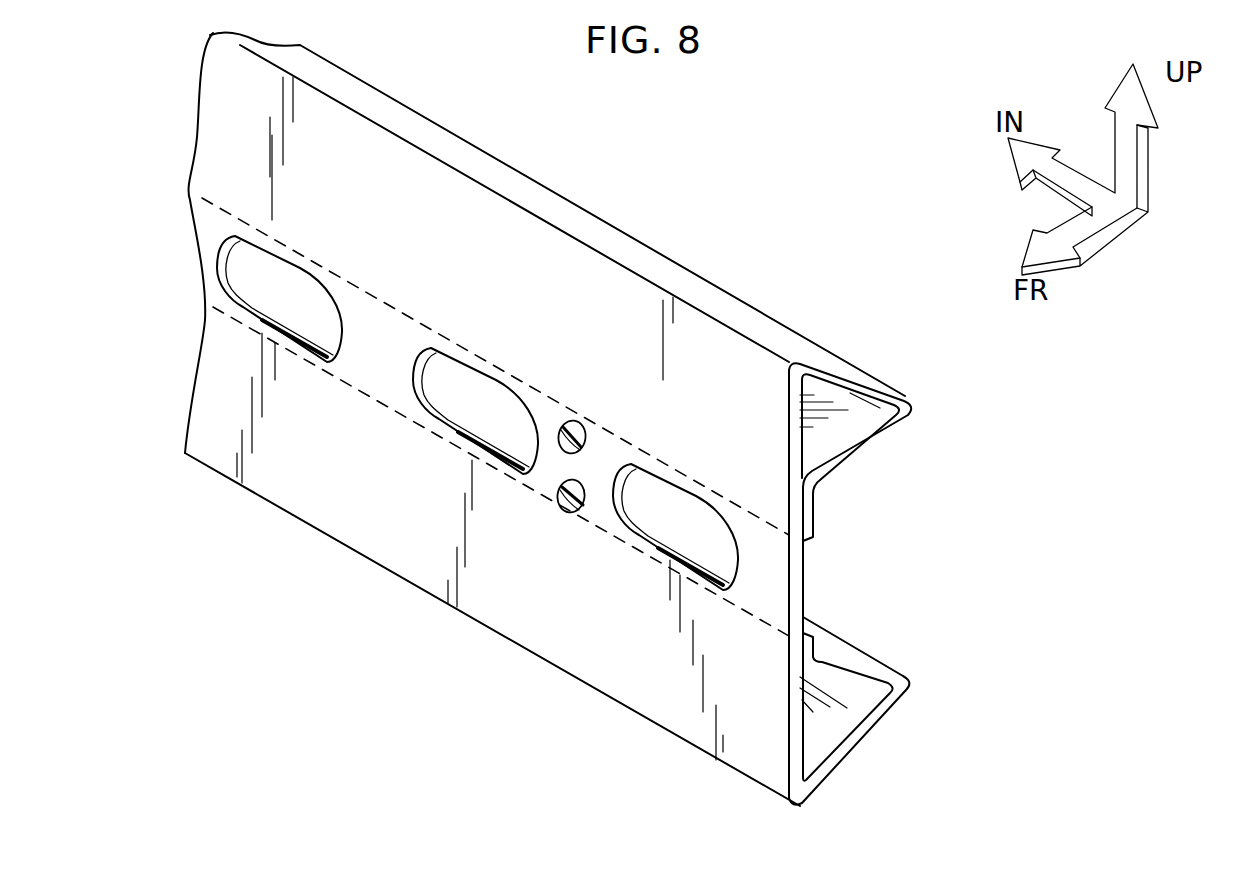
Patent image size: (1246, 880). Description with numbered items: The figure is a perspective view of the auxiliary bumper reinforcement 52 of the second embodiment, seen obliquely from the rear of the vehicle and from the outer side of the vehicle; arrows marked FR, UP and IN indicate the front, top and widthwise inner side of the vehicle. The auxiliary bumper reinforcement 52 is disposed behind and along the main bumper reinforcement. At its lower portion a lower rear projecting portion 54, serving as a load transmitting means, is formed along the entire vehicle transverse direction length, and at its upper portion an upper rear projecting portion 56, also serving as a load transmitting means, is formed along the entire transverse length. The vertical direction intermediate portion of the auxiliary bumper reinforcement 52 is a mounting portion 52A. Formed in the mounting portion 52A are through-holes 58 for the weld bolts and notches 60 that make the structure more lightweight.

The auxiliary bumper reinforcement 52 is at (536, 672).
The mounting portion 52A is at (803, 582).
The lower rear projecting portion 54 is at (858, 742).
The upper rear projecting portion 56 is at (855, 362).
The through-holes 58 is at (560, 487).
The notches 60 is at (306, 272).